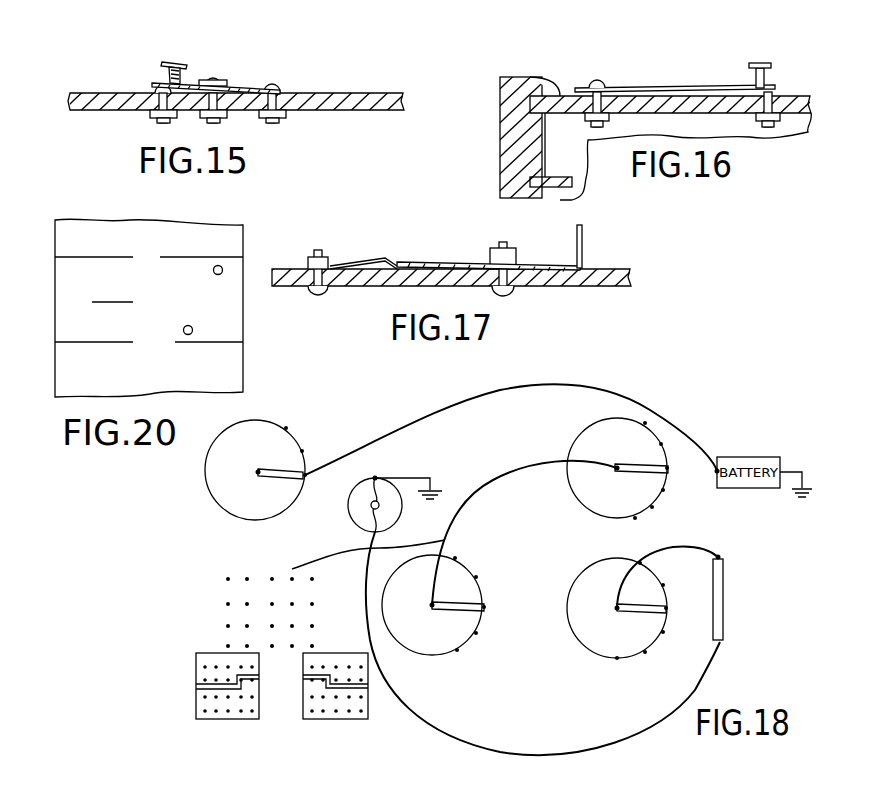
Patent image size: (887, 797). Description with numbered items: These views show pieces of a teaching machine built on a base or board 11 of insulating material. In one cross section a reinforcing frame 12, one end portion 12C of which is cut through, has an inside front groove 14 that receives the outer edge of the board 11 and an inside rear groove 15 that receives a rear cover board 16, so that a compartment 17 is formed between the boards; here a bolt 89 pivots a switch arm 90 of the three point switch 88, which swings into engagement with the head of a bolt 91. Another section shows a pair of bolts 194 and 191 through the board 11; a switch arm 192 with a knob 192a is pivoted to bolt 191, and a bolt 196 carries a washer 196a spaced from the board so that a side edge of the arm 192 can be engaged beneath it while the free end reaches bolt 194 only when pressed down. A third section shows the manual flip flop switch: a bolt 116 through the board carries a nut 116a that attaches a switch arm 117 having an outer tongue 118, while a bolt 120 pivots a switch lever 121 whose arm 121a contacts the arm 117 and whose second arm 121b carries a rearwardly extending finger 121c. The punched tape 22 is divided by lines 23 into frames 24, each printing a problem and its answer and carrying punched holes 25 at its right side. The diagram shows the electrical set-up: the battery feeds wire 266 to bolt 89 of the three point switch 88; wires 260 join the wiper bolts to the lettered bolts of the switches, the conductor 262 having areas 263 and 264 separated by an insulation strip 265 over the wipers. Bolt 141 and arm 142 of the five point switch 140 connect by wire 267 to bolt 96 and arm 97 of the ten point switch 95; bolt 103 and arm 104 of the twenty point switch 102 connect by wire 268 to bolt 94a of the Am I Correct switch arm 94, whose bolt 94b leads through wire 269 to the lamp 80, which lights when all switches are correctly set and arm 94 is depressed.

In FIG. 15, the bolt 194 is at (157, 89).
In FIG. 15, the bolt 196 is at (213, 76).
In FIG. 15, the washer 196a is at (219, 78).
In FIG. 15, the bolt 191 is at (263, 87).
In FIG. 15, the switch arm 192 is at (238, 84).
In FIG. 15, the knob 192a is at (176, 61).
In FIG. 16, the reinforcing frame 12 is at (612, 148).
In FIG. 16, the end portion 12C is at (510, 155).
In FIG. 16, the inside front groove 14 is at (530, 105).
In FIG. 16, the inside rear groove 15 is at (520, 180).
In FIG. 16, the rear cover board 16 is at (572, 190).
In FIG. 16, the compartment 17 is at (569, 157).
In FIG. 16, the bolt 89 is at (598, 82).
In FIG. 18, the bolt 89 is at (241, 459).
In FIG. 16, the switch arm 90 is at (693, 83).
In FIG. 18, the switch arm 90 is at (278, 480).
In FIG. 16, the bolt 91 is at (773, 97).
In FIG. 17, the base or board 11 is at (575, 283).
In FIG. 17, the bolt 116 is at (320, 291).
In FIG. 17, the nut 116a is at (325, 258).
In FIG. 17, the switch arm 117 is at (375, 240).
In FIG. 17, the outer tongue 118 is at (388, 257).
In FIG. 17, the bolt 120 is at (507, 292).
In FIG. 17, the switch lever 121 is at (536, 250).
In FIG. 17, the arm 121a is at (410, 261).
In FIG. 17, the second arm 121b is at (553, 261).
In FIG. 17, the finger 121c is at (582, 244).
In FIG. 20, the tape 22 is at (250, 328).
In FIG. 20, the lines 23 is at (122, 243).
In FIG. 20, the frame 24 is at (232, 275).
In FIG. 20, the punched holes 25 is at (218, 276).
In FIG. 18, the three point switch 88 is at (231, 489).
In FIG. 18, the lamp 80 is at (372, 478).
In FIG. 18, the wire 266 is at (478, 397).
In FIG. 18, the wires 260 is at (405, 547).
In FIG. 18, the wire 267 is at (505, 477).
In FIG. 18, the five point switch 140 is at (451, 623).
In FIG. 18, the bolt 141 is at (430, 606).
In FIG. 18, the switch arm 142 is at (448, 614).
In FIG. 18, the ten point switch 95 is at (617, 477).
In FIG. 18, the bolt 96 is at (609, 449).
In FIG. 18, the switch arm 97 is at (633, 476).
In FIG. 18, the twenty point switch 102 is at (606, 637).
In FIG. 18, the bolt 103 is at (617, 609).
In FIG. 18, the switch arm 104 is at (633, 618).
In FIG. 18, the wire 268 is at (697, 552).
In FIG. 18, the switch arm 94 is at (723, 583).
In FIG. 18, the bolt 94a is at (718, 557).
In FIG. 18, the bolt 94b is at (720, 642).
In FIG. 18, the wire 269 is at (612, 752).
In FIG. 18, the conductor 262 is at (250, 678).
In FIG. 18, the area 263 is at (166, 668).
In FIG. 18, the area 264 is at (200, 705).
In FIG. 18, the insulation strip 265 is at (135, 705).